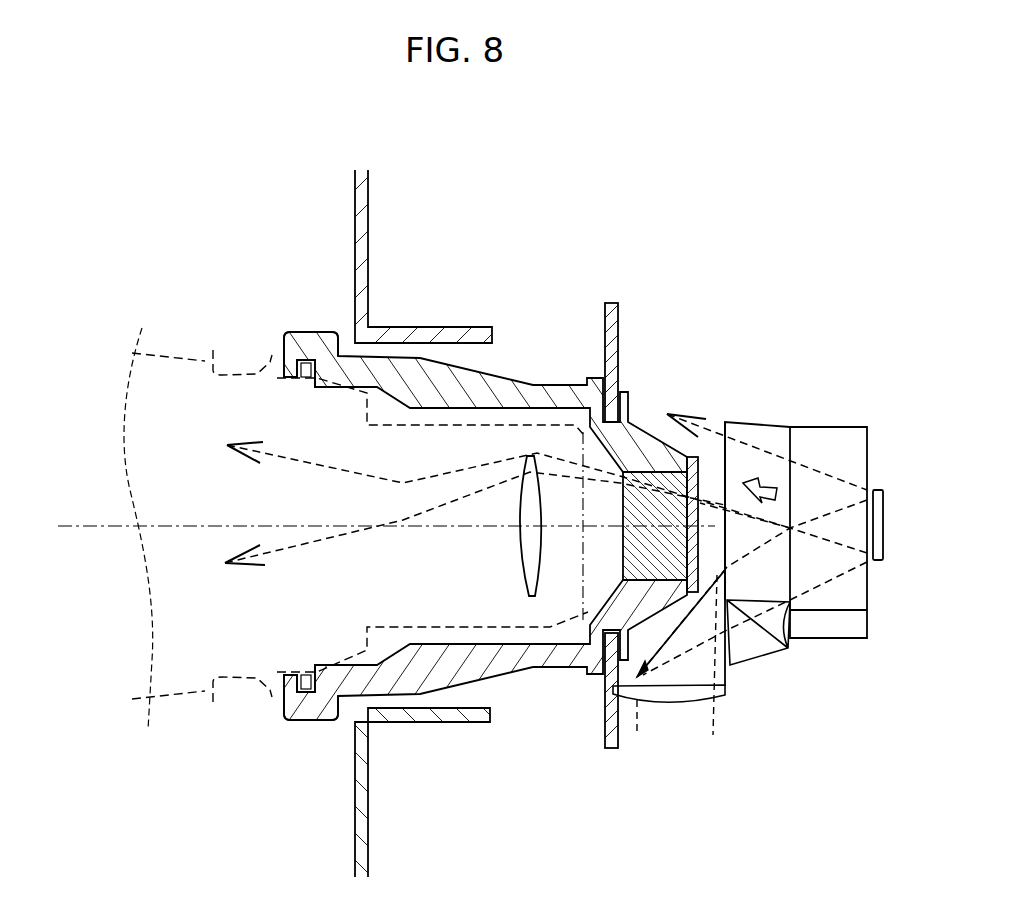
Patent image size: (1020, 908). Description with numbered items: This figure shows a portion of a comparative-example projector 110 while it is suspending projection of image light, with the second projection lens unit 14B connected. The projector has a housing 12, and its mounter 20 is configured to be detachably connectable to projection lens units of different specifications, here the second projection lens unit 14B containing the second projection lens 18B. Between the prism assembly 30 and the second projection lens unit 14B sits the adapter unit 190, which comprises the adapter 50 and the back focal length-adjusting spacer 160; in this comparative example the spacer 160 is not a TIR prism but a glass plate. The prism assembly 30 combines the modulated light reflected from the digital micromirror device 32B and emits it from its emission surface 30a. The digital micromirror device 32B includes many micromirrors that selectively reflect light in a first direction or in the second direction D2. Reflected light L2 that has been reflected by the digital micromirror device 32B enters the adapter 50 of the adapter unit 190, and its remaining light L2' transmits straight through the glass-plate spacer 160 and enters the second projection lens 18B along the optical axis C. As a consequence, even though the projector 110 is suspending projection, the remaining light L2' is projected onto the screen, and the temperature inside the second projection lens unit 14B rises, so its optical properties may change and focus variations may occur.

The projector 110 is at (166, 303).
The housing 12 is at (357, 192).
The second projection lens unit 14B is at (213, 350).
The adapter 50 is at (300, 332).
The adapter unit 190 is at (542, 371).
The mounter 20 is at (606, 323).
The second projection lens 18B is at (527, 568).
The back focal length-adjusting spacer 160 is at (640, 537).
The prism assembly 30 is at (857, 413).
The emission surface 30a is at (725, 422).
The reflected light L2 is at (752, 513).
The second direction D2 is at (765, 483).
The digital micromirror device 32B is at (882, 560).
The remaining light L2' is at (507, 501).
The optical axis C is at (373, 529).